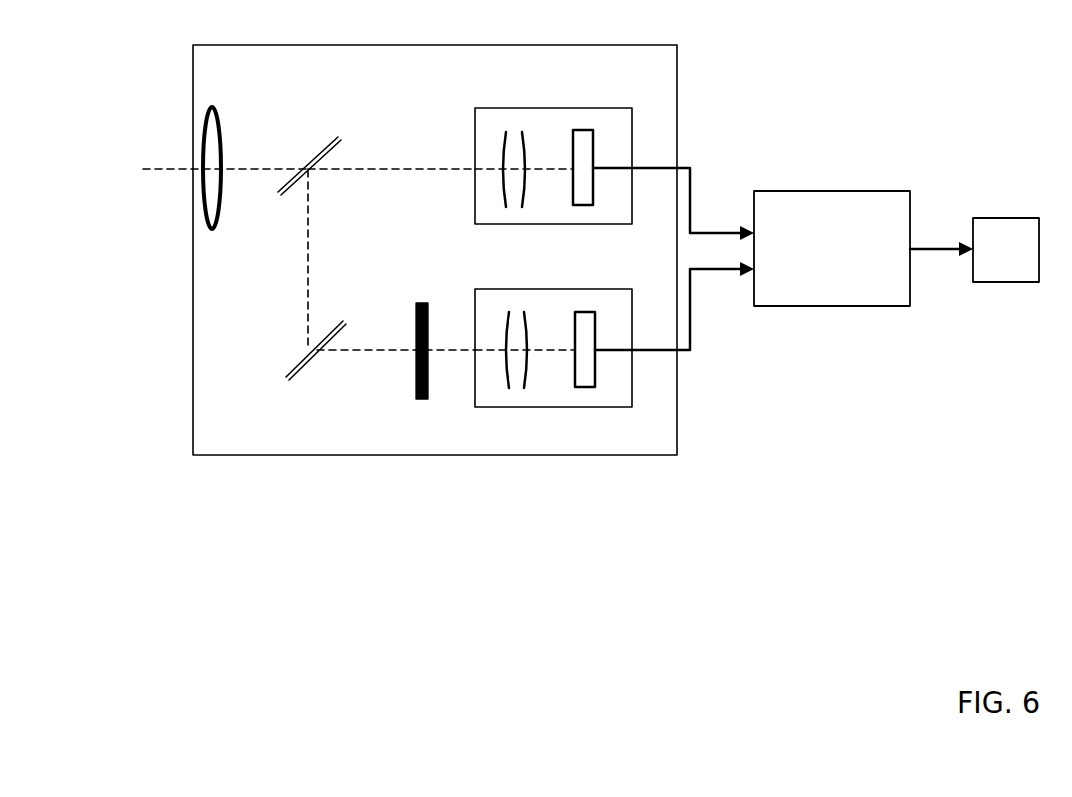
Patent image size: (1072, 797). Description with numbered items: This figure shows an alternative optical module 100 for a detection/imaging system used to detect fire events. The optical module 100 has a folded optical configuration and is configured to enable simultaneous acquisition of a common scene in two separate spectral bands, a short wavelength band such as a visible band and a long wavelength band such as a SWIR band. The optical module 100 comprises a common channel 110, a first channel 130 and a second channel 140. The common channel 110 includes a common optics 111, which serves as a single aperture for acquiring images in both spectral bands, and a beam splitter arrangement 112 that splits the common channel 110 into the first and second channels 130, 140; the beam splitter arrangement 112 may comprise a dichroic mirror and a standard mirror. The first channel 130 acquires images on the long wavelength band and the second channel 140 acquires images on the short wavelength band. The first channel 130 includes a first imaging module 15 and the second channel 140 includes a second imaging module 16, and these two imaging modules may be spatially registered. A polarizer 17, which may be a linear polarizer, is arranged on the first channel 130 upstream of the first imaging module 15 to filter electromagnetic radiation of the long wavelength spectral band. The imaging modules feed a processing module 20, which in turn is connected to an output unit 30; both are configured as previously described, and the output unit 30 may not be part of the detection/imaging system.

The optical module 100 is at (233, 455).
The common channel 110 is at (243, 143).
The common optics 111 is at (203, 158).
The beam splitter arrangement 112 is at (279, 185).
The second channel 140 is at (393, 157).
The first channel 130 is at (342, 370).
The polarizer 17 is at (420, 303).
The second imaging module 16 is at (480, 108).
The first imaging module 15 is at (590, 289).
The processing module 20 is at (797, 191).
The output unit 30 is at (1015, 218).